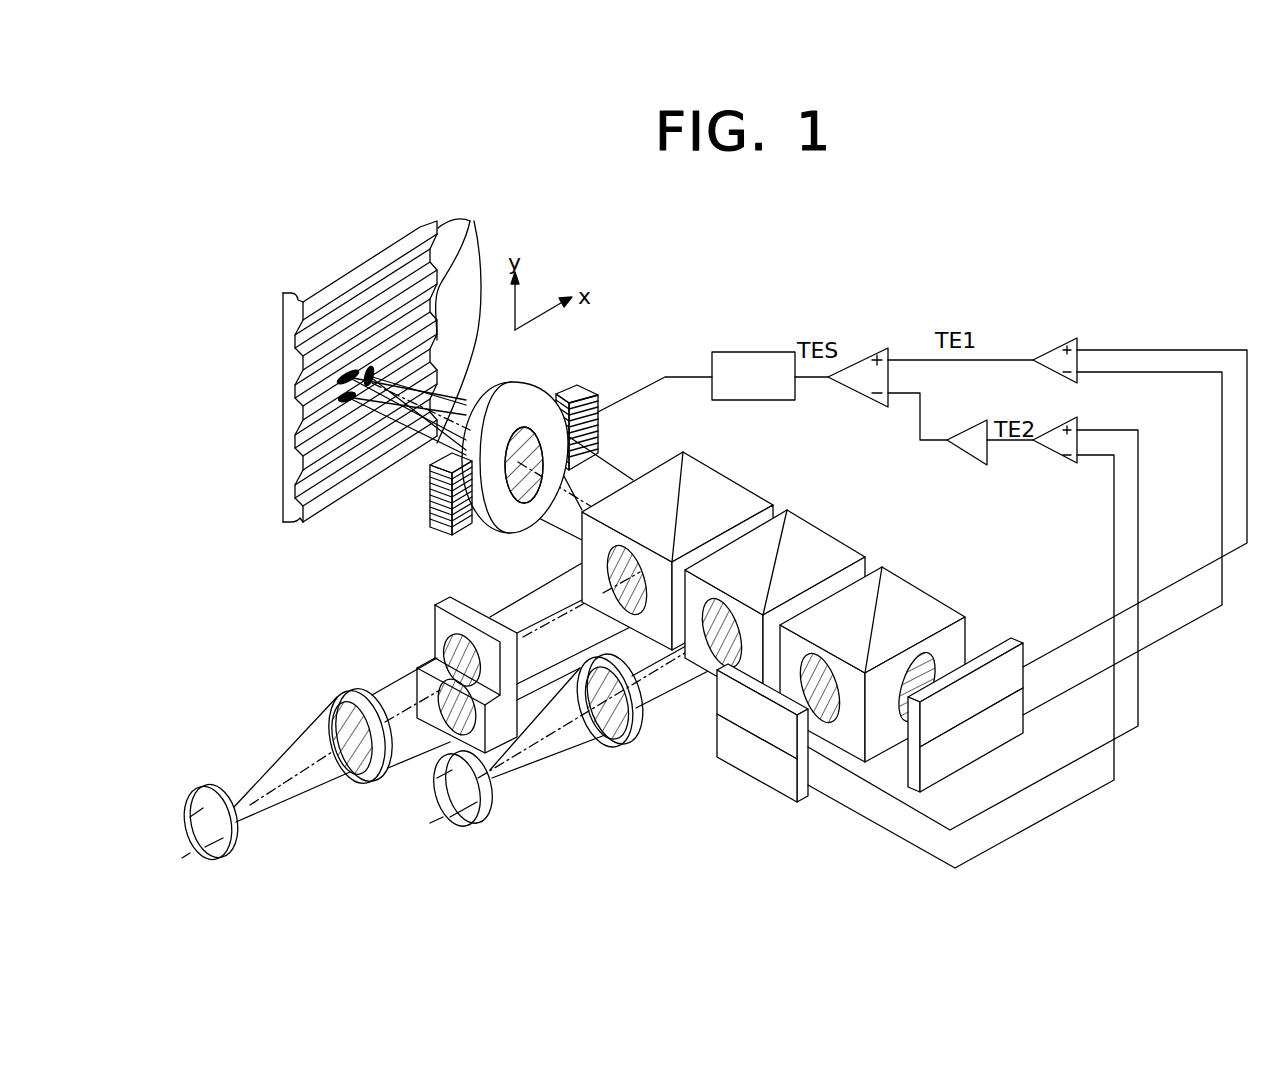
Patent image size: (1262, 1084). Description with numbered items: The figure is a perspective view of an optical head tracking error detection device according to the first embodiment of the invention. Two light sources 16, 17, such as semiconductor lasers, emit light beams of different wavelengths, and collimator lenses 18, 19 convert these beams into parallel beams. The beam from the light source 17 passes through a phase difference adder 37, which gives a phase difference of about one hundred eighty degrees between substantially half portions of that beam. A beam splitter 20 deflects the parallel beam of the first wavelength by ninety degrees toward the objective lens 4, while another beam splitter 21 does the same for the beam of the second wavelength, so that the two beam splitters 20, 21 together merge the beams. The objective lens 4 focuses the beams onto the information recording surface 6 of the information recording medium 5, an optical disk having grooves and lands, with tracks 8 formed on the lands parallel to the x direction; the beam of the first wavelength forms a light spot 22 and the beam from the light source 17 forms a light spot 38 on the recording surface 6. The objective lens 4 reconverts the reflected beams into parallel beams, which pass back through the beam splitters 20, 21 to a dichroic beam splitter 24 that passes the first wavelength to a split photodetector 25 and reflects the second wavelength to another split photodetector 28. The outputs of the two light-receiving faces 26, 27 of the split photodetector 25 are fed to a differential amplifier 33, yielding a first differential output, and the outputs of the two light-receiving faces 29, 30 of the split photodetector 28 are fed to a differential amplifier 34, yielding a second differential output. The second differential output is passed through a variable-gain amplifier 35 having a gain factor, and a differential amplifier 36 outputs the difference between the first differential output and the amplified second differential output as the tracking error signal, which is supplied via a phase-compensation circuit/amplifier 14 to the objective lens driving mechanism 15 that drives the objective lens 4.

The objective lens 4 is at (525, 388).
The information recording medium 5 is at (338, 368).
The information recording surface 6 is at (323, 298).
The track 8 is at (464, 325).
The phase-compensation circuit/amplifier 14 is at (755, 348).
The objective lens driving mechanism 15 is at (598, 384).
The light source 16 is at (490, 798).
The light source 17 is at (210, 785).
The collimator lens 18 is at (625, 750).
The collimator lens 19 is at (350, 695).
The beam splitter 20 is at (825, 520).
The beam splitter 21 is at (728, 478).
The light spot 22 is at (303, 323).
The dichroic beam splitter 24 is at (925, 577).
The split photodetector 25 is at (998, 682).
The light-receiving face 26 is at (1028, 650).
The light-receiving face 27 is at (1030, 732).
The split photodetector 28 is at (785, 765).
The light-receiving face 29 is at (812, 770).
The light-receiving face 30 is at (785, 785).
The differential amplifier 33 is at (1050, 338).
The differential amplifier 34 is at (1055, 463).
The variable-gain amplifier 35 is at (965, 465).
The differential amplifier 36 is at (862, 347).
The phase difference adder 37 is at (438, 604).
The light spot 38 is at (337, 398).